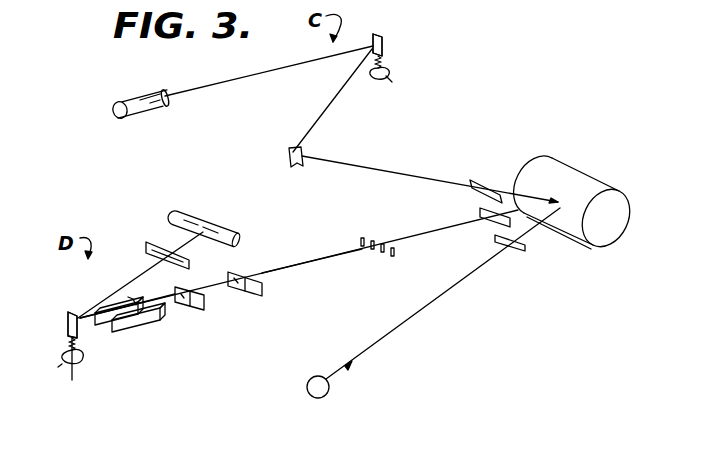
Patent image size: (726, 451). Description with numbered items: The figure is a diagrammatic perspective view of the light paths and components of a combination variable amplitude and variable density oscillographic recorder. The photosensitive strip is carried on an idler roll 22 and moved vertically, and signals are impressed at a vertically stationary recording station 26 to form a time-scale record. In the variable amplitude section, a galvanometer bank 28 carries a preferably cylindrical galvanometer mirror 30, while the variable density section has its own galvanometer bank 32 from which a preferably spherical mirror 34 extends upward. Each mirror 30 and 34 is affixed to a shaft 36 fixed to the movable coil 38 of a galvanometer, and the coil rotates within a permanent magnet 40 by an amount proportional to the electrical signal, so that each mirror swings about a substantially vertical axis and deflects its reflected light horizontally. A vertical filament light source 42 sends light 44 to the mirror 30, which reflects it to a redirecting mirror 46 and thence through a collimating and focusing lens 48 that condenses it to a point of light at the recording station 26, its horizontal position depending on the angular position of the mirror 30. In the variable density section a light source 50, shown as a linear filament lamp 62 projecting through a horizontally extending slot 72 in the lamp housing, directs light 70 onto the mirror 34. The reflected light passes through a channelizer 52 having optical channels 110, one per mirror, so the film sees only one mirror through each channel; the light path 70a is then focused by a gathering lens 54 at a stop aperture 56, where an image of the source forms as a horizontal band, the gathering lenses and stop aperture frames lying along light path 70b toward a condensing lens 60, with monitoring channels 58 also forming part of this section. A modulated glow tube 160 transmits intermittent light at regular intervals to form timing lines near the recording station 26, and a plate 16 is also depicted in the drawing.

The plate 16 is at (512, 250).
The idler roll 22 is at (628, 220).
The recording station 26 is at (560, 211).
The galvanometer bank 28 is at (384, 47).
The galvanometer mirror 30 is at (380, 34).
The galvanometer bank 32 is at (67, 322).
The mirror 34 is at (78, 330).
The shaft 36 is at (78, 338).
The movable coil 38 is at (386, 62).
The permanent magnet 40 is at (388, 76).
The vertical filament light source 42 is at (146, 108).
The light path 44 is at (234, 84).
The redirecting mirror 46 is at (296, 165).
The collimating and focusing lens 48 is at (487, 182).
The light source 50 is at (240, 213).
The channelizer 52 is at (150, 320).
The gathering lens 54 is at (201, 308).
The stop aperture 56 is at (258, 296).
The monitoring channels 58 is at (362, 240).
The condensing lens 60 is at (480, 213).
The linear filament lamp 62 is at (191, 216).
The light path 70 is at (138, 268).
The light path 70a is at (172, 298).
The light path 70b is at (342, 256).
The horizontally extending slot 72 is at (158, 248).
The optical channel 110 is at (132, 298).
The modulated glow tube 160 is at (316, 398).